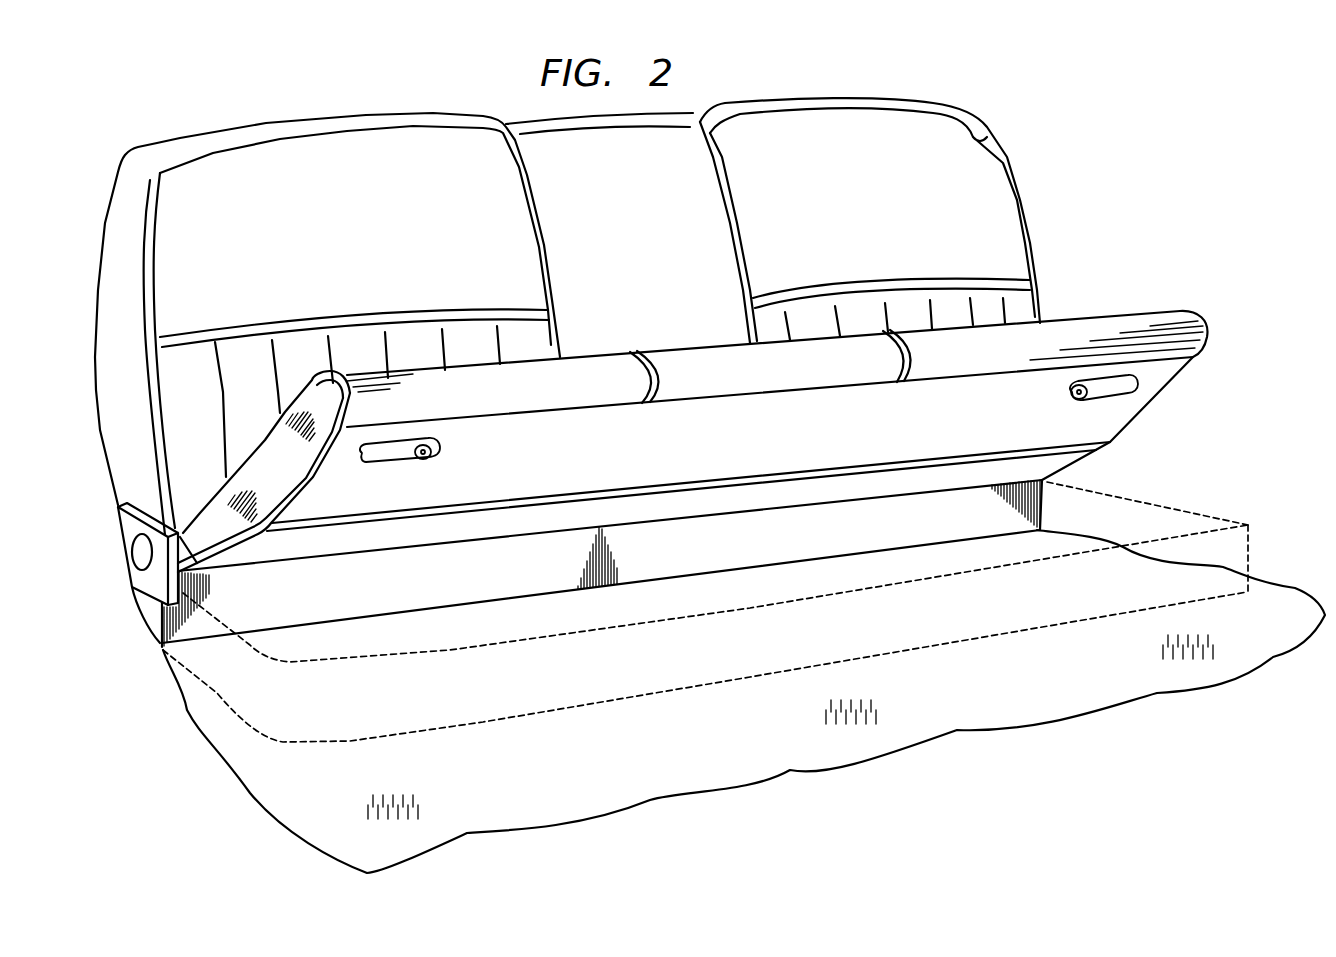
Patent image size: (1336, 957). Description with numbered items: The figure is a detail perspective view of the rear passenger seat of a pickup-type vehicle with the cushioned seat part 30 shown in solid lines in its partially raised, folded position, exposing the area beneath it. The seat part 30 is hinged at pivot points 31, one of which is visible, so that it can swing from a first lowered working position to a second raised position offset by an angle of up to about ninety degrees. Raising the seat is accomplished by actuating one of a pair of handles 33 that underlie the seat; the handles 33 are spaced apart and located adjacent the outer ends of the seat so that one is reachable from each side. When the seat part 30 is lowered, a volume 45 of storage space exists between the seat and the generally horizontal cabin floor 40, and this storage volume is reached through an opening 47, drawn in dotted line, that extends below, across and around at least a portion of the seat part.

The seat part 30 is at (1097, 318).
The pivot point 31 is at (142, 558).
The handle 33 is at (387, 460).
The cabin floor 40 is at (1030, 710).
The volume of storage space 45 is at (678, 610).
The opening 47 is at (1216, 519).